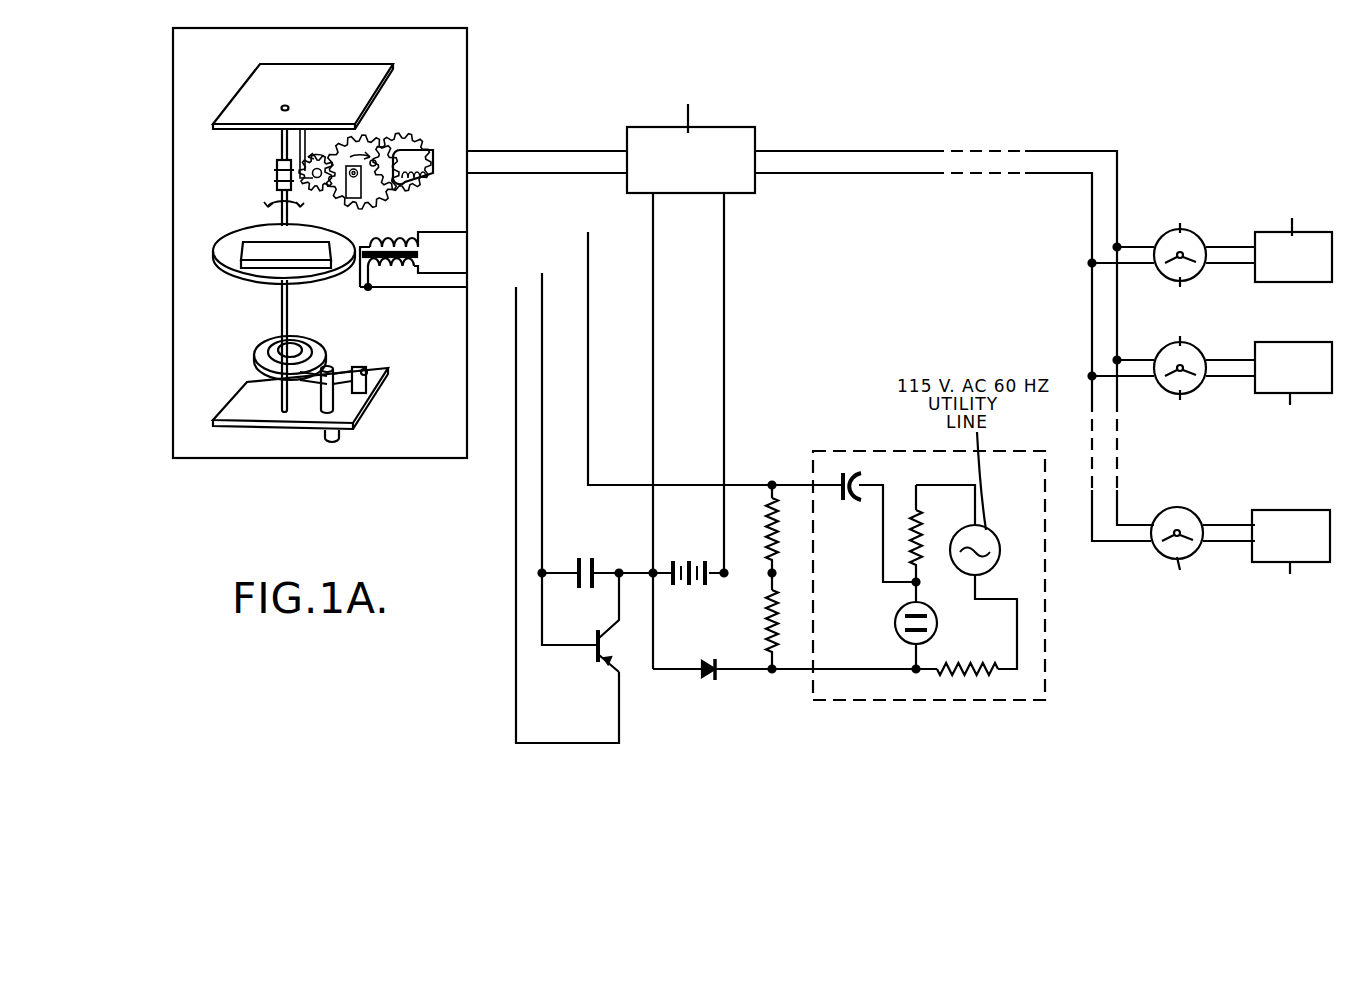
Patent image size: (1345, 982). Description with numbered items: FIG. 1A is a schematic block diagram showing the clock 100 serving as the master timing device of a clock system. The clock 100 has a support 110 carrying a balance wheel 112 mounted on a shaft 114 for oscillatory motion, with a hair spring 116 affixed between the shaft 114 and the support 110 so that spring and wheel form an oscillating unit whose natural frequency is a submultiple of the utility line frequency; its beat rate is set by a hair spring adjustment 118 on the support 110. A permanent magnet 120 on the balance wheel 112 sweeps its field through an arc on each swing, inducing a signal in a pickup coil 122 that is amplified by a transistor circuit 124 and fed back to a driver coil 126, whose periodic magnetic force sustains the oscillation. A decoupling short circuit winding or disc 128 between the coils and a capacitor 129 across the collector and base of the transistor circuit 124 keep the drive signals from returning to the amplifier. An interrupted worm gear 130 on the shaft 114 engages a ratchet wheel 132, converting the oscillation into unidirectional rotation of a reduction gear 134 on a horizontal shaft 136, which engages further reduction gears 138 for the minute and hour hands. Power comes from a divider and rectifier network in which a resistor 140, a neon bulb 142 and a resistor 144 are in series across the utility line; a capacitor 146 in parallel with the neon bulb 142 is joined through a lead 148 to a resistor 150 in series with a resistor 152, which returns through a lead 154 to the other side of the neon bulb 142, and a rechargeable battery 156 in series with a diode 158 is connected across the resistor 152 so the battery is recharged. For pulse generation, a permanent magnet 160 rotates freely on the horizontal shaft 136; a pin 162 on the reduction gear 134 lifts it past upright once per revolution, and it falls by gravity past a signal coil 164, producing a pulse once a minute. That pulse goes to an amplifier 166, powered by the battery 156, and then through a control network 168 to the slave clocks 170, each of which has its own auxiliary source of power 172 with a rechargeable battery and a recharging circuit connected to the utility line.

The clock 100 is at (186, 344).
The support 110 is at (355, 405).
The balance wheel 112 is at (214, 252).
The shaft 114 is at (282, 316).
The hair spring 116 is at (256, 360).
The hair spring adjustment 118 is at (330, 367).
The permanent magnet 120 is at (262, 247).
The pickup coil 122 is at (403, 275).
The transistor circuit 124 is at (616, 677).
The driver coil 126 is at (400, 242).
The decoupling short circuit winding or disc 128 is at (417, 254).
The capacitor 129 is at (590, 557).
The interrupted worm gear 130 is at (277, 171).
The ratchet wheel 132 is at (316, 152).
The reduction gear 134 is at (346, 150).
The horizontal shaft 136 is at (348, 196).
The further reduction gears 138 is at (390, 130).
The resistor 140 is at (920, 532).
The neon bulb 142 is at (895, 623).
The resistor 144 is at (975, 665).
The capacitor 146 is at (856, 501).
The lead 148 is at (772, 482).
The resistor 150 is at (767, 530).
The resistor 152 is at (766, 621).
The lead 154 is at (857, 668).
The rechargeable battery 156 is at (688, 558).
The diode 158 is at (706, 683).
The permanent magnet 160 is at (368, 184).
The pin 162 is at (403, 150).
The signal coil 164 is at (420, 184).
The amplifier 166 is at (690, 129).
The control network 168 is at (1073, 151).
The slave clocks 170 is at (1191, 397).
The auxiliary source of power 172 is at (1297, 275).